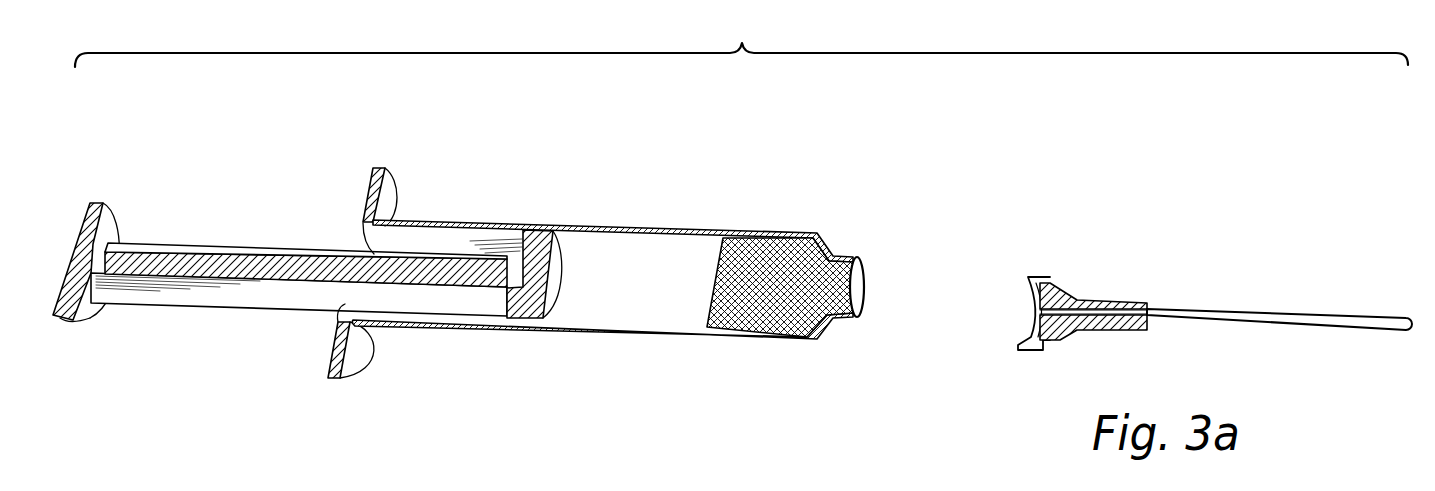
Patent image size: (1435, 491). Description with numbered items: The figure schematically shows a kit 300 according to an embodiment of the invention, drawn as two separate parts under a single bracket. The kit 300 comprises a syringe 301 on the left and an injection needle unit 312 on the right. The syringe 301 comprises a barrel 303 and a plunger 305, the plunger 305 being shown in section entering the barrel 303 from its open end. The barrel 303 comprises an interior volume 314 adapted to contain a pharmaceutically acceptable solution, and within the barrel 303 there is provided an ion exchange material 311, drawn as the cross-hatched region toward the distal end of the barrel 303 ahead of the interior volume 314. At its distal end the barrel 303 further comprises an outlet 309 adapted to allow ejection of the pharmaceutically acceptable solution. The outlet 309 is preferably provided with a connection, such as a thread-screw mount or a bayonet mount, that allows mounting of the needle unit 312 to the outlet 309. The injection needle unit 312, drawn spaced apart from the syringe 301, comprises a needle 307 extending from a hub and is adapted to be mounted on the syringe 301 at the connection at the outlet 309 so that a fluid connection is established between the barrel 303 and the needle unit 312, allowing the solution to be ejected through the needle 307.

The kit 300 is at (741, 37).
The syringe 301 is at (678, 162).
The barrel 303 is at (460, 222).
The plunger 305 is at (265, 253).
The needle 307 is at (1173, 310).
The outlet 309 is at (857, 260).
The ion exchange material 311 is at (760, 308).
The injection needle unit 312 is at (1292, 245).
The interior volume 314 is at (622, 300).